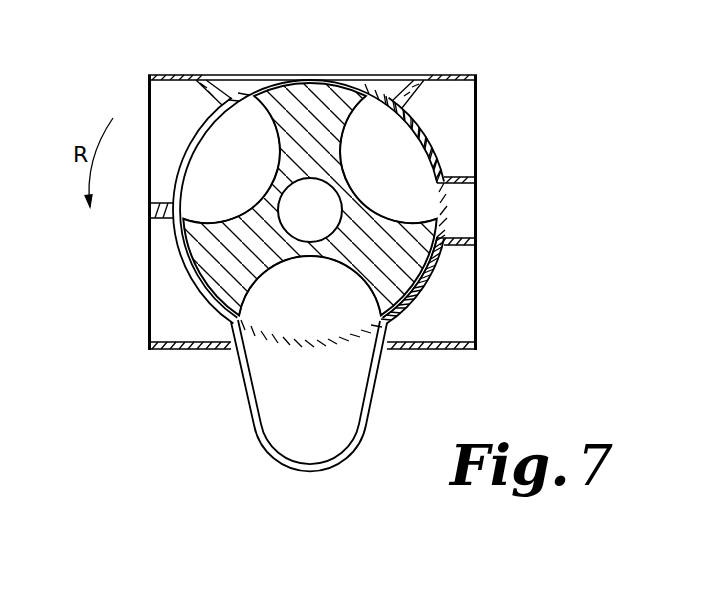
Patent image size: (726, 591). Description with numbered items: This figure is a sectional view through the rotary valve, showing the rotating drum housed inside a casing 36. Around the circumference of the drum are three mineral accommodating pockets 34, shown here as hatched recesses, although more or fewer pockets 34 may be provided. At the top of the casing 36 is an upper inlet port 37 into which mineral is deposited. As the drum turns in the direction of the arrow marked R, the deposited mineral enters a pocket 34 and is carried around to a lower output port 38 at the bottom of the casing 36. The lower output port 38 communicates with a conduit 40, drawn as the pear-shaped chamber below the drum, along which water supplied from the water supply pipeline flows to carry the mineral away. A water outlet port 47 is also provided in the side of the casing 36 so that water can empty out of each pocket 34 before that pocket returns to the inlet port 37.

The mineral accommodating pocket 34 is at (223, 143).
The casing 36 is at (172, 287).
The upper inlet port 37 is at (393, 70).
The lower output port 38 is at (350, 328).
The conduit 40 is at (348, 392).
The water outlet port 47 is at (453, 203).